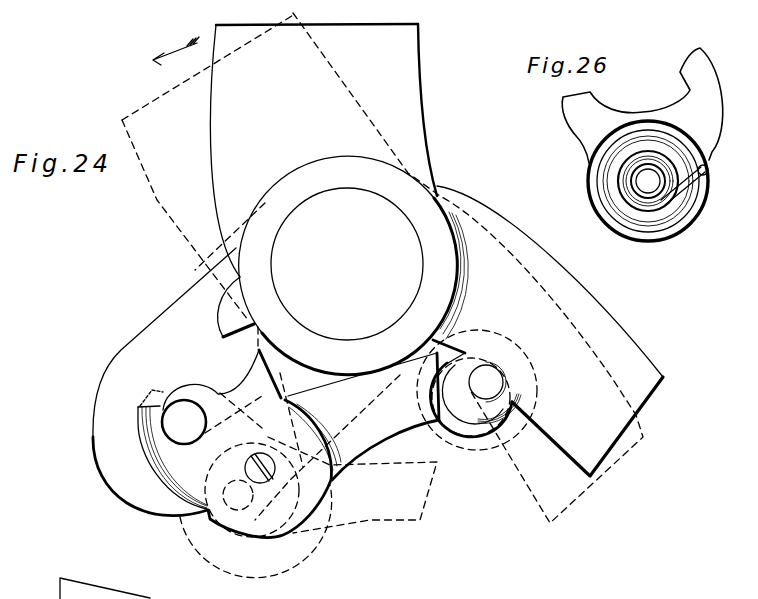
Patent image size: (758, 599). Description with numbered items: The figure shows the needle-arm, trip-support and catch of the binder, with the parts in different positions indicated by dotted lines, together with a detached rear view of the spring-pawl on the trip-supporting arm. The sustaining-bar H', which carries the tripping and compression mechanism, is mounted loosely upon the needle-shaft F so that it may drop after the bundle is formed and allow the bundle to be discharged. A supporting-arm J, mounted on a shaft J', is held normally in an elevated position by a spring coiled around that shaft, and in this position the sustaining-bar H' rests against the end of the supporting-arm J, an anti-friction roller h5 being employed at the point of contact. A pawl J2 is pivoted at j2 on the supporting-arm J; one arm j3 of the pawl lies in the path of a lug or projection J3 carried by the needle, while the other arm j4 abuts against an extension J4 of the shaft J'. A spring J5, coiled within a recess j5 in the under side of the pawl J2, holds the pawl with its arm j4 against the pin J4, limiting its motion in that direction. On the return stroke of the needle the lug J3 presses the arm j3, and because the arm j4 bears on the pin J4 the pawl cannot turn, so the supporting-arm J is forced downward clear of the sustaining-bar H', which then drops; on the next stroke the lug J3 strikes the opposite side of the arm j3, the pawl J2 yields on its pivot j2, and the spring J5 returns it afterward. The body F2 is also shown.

In FIG. 24, the cylinder body F2 is at (449, 124).
In FIG. 24, the needle-shaft F is at (334, 245).
In FIG. 24, the supporting-arm J is at (279, 364).
In FIG. 24, the shaft J' is at (129, 358).
In FIG. 24, the pawl J2 is at (217, 443).
In FIG. 26, the pawl J2 is at (585, 192).
In FIG. 24, the lug or projection J3 is at (220, 322).
In FIG. 24, the extension J4 is at (184, 422).
In FIG. 26, the spring J5 is at (638, 205).
In FIG. 24, the pivot j2 is at (268, 480).
In FIG. 26, the pivot j2 is at (647, 178).
In FIG. 26, the arm j3 is at (642, 99).
In FIG. 24, the arm j4 is at (150, 447).
In FIG. 26, the recess j5 is at (658, 222).
In FIG. 24, the anti-friction roller h5 is at (513, 410).
In FIG. 24, the sustaining-bar H' is at (562, 331).